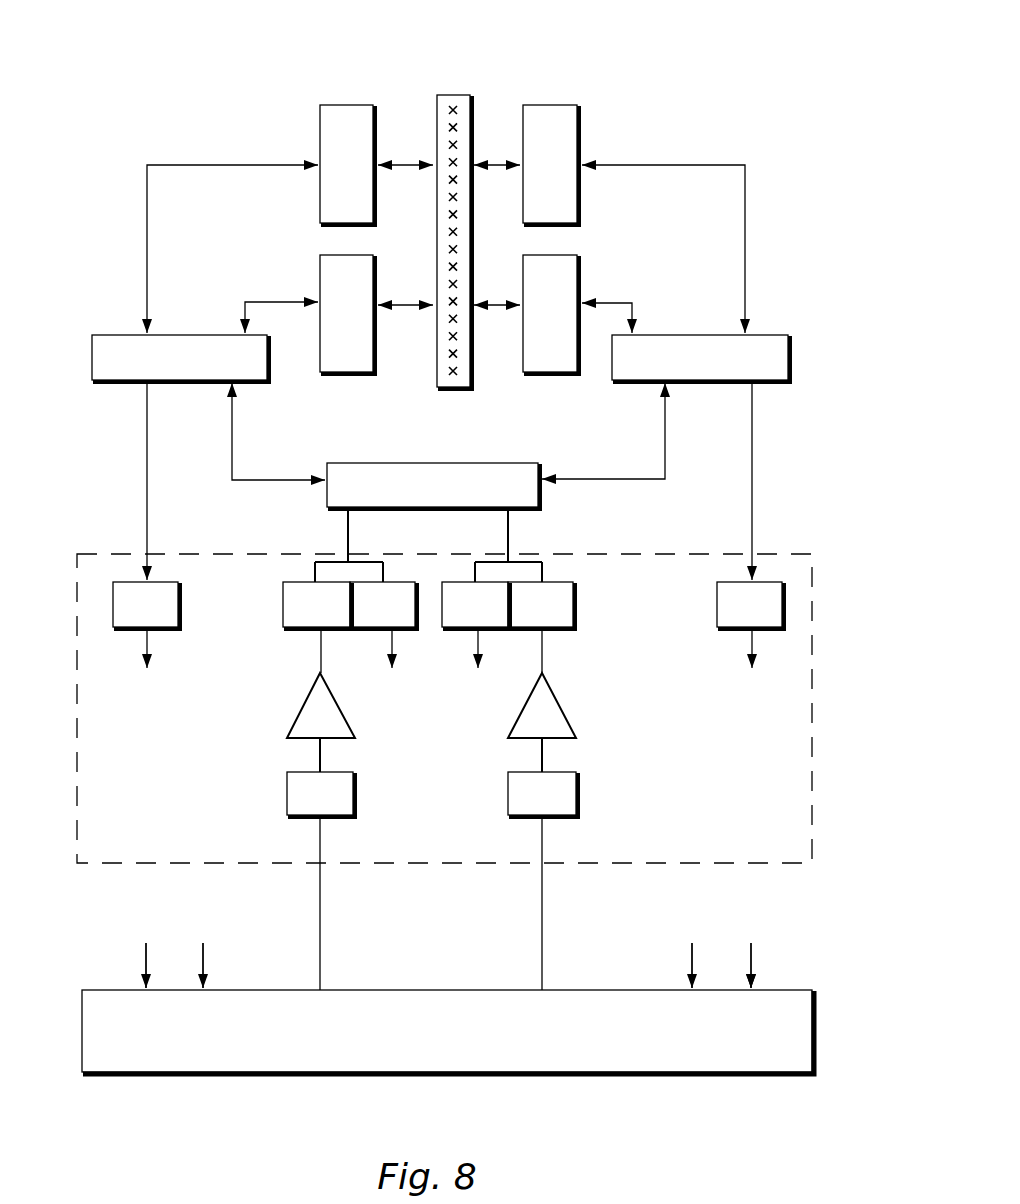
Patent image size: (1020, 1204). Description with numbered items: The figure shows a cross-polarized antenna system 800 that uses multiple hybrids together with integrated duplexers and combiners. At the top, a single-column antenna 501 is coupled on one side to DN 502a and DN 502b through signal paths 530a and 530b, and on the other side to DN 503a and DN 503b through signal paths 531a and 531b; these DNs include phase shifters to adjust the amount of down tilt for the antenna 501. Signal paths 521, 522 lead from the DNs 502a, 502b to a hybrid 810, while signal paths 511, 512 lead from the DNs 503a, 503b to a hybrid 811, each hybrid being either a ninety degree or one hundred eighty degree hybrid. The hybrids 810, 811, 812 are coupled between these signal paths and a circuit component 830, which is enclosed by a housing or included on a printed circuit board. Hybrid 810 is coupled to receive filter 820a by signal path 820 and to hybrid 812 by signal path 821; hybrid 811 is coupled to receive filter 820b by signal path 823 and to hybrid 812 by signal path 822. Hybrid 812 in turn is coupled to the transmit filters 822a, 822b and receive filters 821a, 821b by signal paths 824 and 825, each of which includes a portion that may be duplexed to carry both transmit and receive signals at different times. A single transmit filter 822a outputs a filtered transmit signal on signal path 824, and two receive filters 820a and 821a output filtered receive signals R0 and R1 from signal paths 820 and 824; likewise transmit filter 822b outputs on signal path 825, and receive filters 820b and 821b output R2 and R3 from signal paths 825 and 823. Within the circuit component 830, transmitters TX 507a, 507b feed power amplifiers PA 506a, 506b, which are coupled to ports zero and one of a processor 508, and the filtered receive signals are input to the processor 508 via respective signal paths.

The cross-polarized antenna system 800 is at (706, 37).
The antenna 501 is at (481, 102).
The DN 502a is at (320, 116).
The DN 502b is at (320, 270).
The DN 503a is at (579, 118).
The DN 503b is at (579, 272).
The signal path 530a is at (410, 172).
The signal path 530b is at (410, 312).
The signal path 531a is at (506, 172).
The signal path 531b is at (506, 312).
The signal path 521 is at (147, 172).
The signal path 522 is at (245, 305).
The signal path 511 is at (746, 180).
The signal path 512 is at (633, 303).
The hybrid 810 is at (92, 338).
The hybrid 811 is at (790, 340).
The hybrid 812 is at (435, 463).
The signal path 820 is at (147, 448).
The signal path 821 is at (232, 446).
The signal path 822 is at (665, 452).
The signal path 823 is at (752, 455).
The signal path 824 is at (348, 540).
The signal path 825 is at (508, 540).
The circuit component 830 is at (77, 554).
The receive filter 820a is at (113, 600).
The receive filter 820b is at (786, 604).
The transmit filter 822a is at (283, 598).
The transmit filter 822b is at (577, 600).
The receive filter 821a is at (378, 629).
The receive filter 821b is at (470, 629).
The PA 506a is at (300, 706).
The PA 506b is at (562, 706).
The TX 507a is at (287, 795).
The TX 507b is at (576, 795).
The processor 508 is at (448, 996).